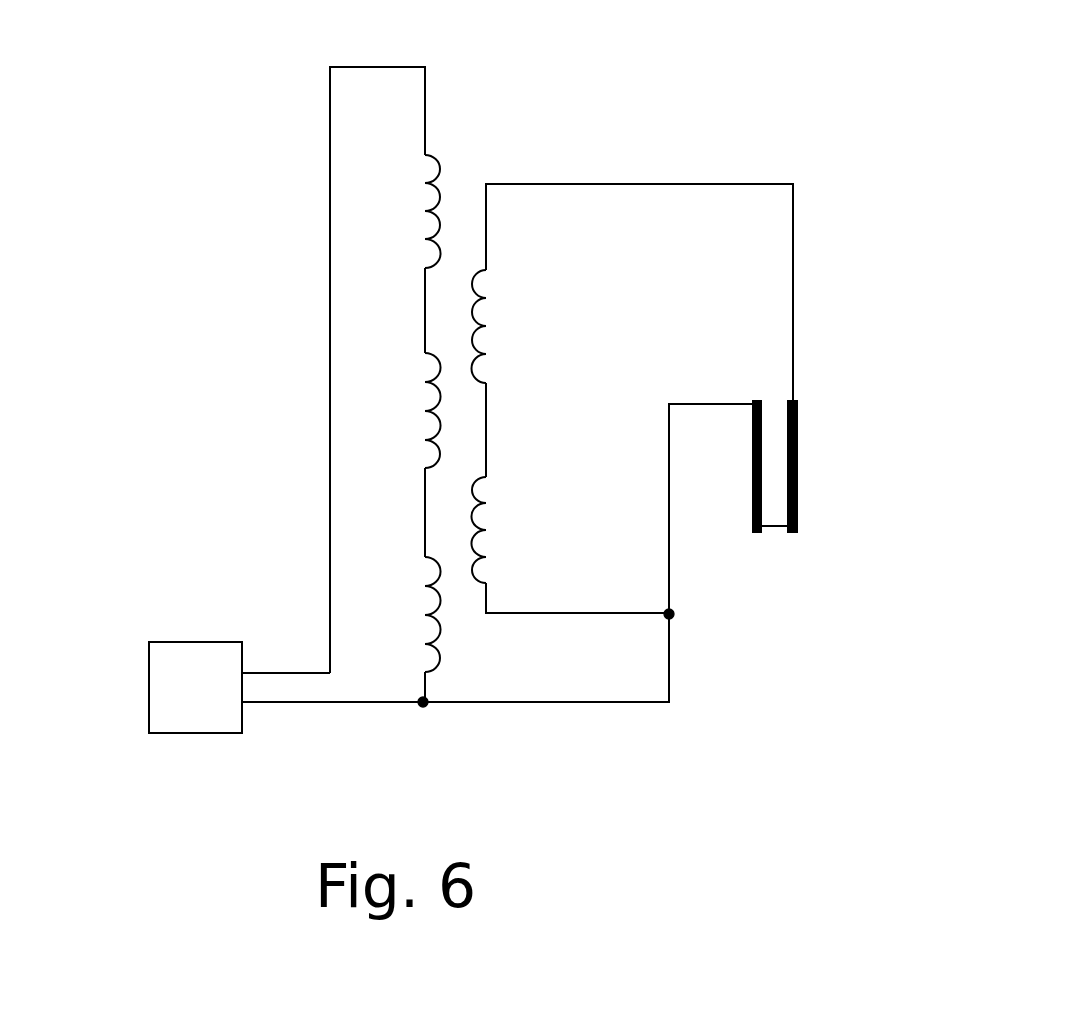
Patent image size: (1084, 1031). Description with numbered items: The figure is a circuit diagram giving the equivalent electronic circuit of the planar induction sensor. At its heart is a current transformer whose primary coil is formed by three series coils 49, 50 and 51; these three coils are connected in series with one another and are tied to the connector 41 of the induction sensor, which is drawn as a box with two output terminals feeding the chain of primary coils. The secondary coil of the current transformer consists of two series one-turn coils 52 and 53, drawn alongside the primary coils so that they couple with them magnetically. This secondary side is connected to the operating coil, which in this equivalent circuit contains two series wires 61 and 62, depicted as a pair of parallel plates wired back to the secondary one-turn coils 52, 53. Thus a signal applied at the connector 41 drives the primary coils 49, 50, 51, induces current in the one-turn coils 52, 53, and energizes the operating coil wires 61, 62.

The connector 41 is at (180, 650).
The series coil 49 is at (437, 593).
The series coil 50 is at (437, 396).
The series coil 51 is at (435, 192).
The one-turn coil 52 is at (480, 478).
The one-turn coil 53 is at (482, 268).
The series wire 61 is at (750, 438).
The series wire 62 is at (800, 436).